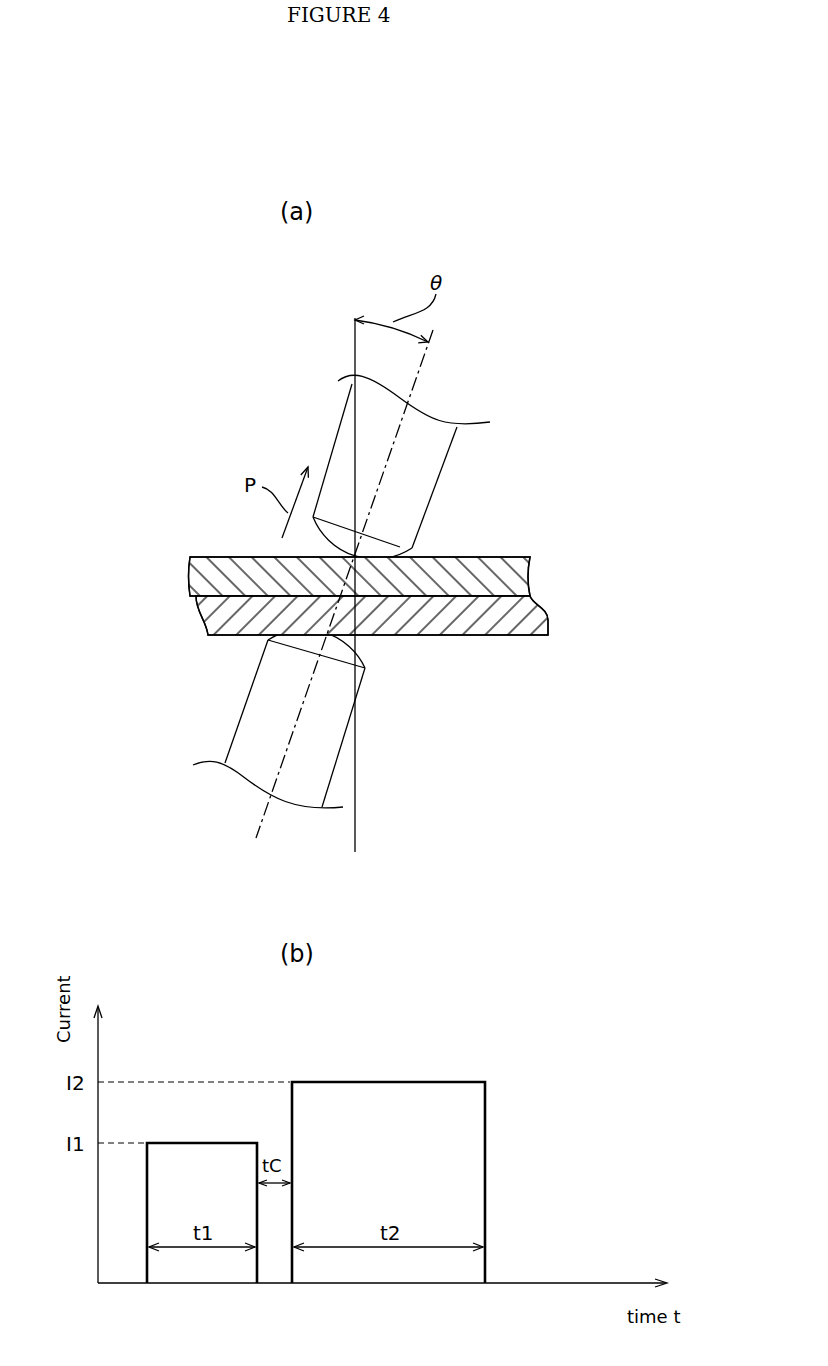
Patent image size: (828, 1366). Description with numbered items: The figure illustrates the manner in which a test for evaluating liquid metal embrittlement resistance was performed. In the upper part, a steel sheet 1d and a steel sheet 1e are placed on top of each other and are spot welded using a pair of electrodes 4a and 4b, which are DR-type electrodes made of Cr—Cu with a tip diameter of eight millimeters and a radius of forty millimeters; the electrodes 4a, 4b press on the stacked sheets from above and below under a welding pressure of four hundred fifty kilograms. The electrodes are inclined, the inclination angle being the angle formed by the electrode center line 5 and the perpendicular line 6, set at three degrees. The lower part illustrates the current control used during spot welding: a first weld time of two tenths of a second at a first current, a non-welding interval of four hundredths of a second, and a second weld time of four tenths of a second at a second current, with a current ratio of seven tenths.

The electrode 4a is at (422, 484).
The electrode 4b is at (262, 690).
The steel sheet 1d is at (190, 573).
The steel sheet 1e is at (208, 620).
The electrode center line 5 is at (422, 368).
The perpendicular line 6 is at (355, 346).